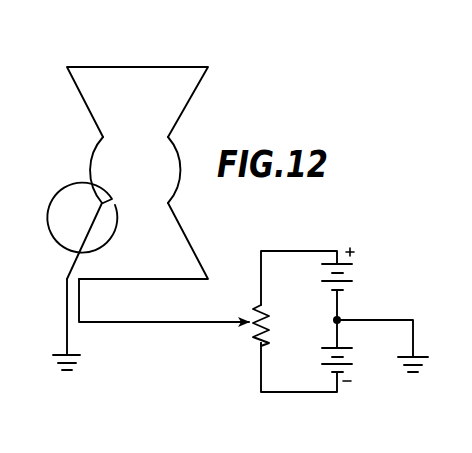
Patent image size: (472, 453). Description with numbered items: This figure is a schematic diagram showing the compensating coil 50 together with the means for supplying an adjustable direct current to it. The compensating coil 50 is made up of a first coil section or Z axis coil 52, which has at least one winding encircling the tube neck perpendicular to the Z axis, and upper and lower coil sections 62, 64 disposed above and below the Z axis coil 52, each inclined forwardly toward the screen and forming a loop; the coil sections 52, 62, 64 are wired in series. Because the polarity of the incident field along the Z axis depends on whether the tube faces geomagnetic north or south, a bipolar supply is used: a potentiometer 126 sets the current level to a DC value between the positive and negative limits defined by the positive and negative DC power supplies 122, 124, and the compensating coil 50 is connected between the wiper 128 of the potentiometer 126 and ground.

The compensating coil 50 is at (141, 151).
The Z axis coil 52 is at (123, 139).
The upper coil section 62 is at (187, 105).
The lower coil section 64 is at (202, 220).
The positive DC power supply 122 is at (356, 275).
The negative DC power supply 124 is at (364, 368).
The potentiometer 126 is at (285, 323).
The wiper 128 is at (188, 324).